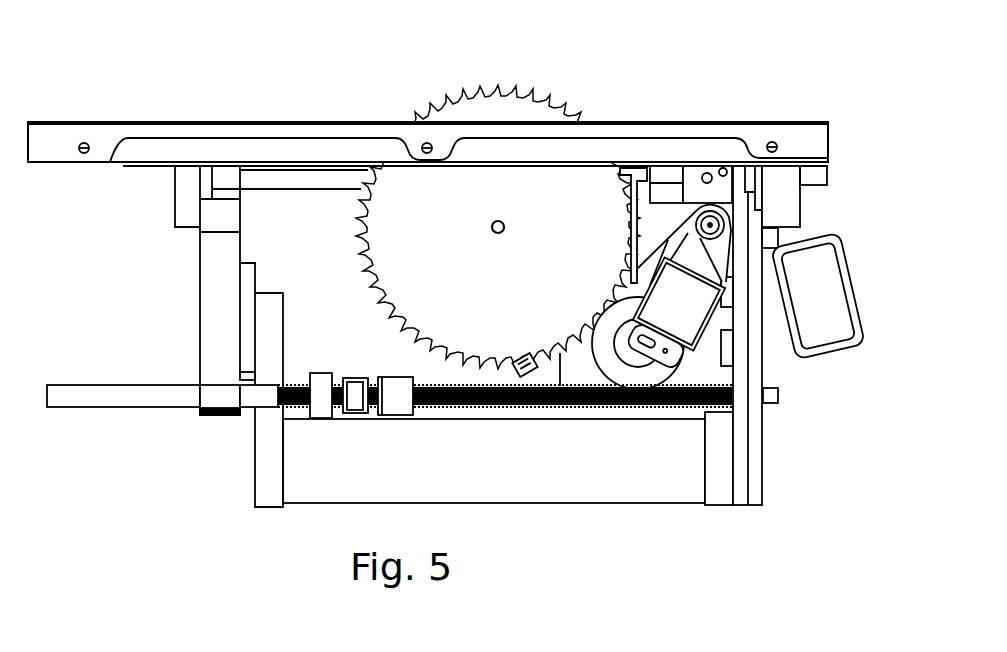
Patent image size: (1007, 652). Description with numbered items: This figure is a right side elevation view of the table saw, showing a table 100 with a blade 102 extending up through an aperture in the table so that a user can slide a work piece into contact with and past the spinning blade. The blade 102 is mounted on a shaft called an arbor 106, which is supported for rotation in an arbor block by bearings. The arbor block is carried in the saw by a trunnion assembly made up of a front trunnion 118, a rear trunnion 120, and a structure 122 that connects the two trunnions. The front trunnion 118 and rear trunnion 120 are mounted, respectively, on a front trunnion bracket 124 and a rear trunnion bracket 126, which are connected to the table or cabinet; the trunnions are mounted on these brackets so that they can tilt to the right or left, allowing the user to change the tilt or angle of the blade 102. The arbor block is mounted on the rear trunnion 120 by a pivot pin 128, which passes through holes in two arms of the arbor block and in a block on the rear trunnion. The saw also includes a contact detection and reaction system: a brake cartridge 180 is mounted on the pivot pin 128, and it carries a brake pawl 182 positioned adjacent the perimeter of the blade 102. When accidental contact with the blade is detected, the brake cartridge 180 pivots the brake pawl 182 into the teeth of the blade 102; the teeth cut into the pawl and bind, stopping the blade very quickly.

The table 100 is at (105, 132).
The blade 102 is at (518, 110).
The arbor 106 is at (493, 222).
The front trunnion 118 is at (217, 314).
The rear trunnion 120 is at (753, 452).
The structure 122 is at (652, 478).
The front trunnion bracket 124 is at (185, 203).
The rear trunnion bracket 126 is at (782, 195).
The pivot pin 128 is at (712, 222).
The brake cartridge 180 is at (680, 312).
The brake pawl 182 is at (652, 268).